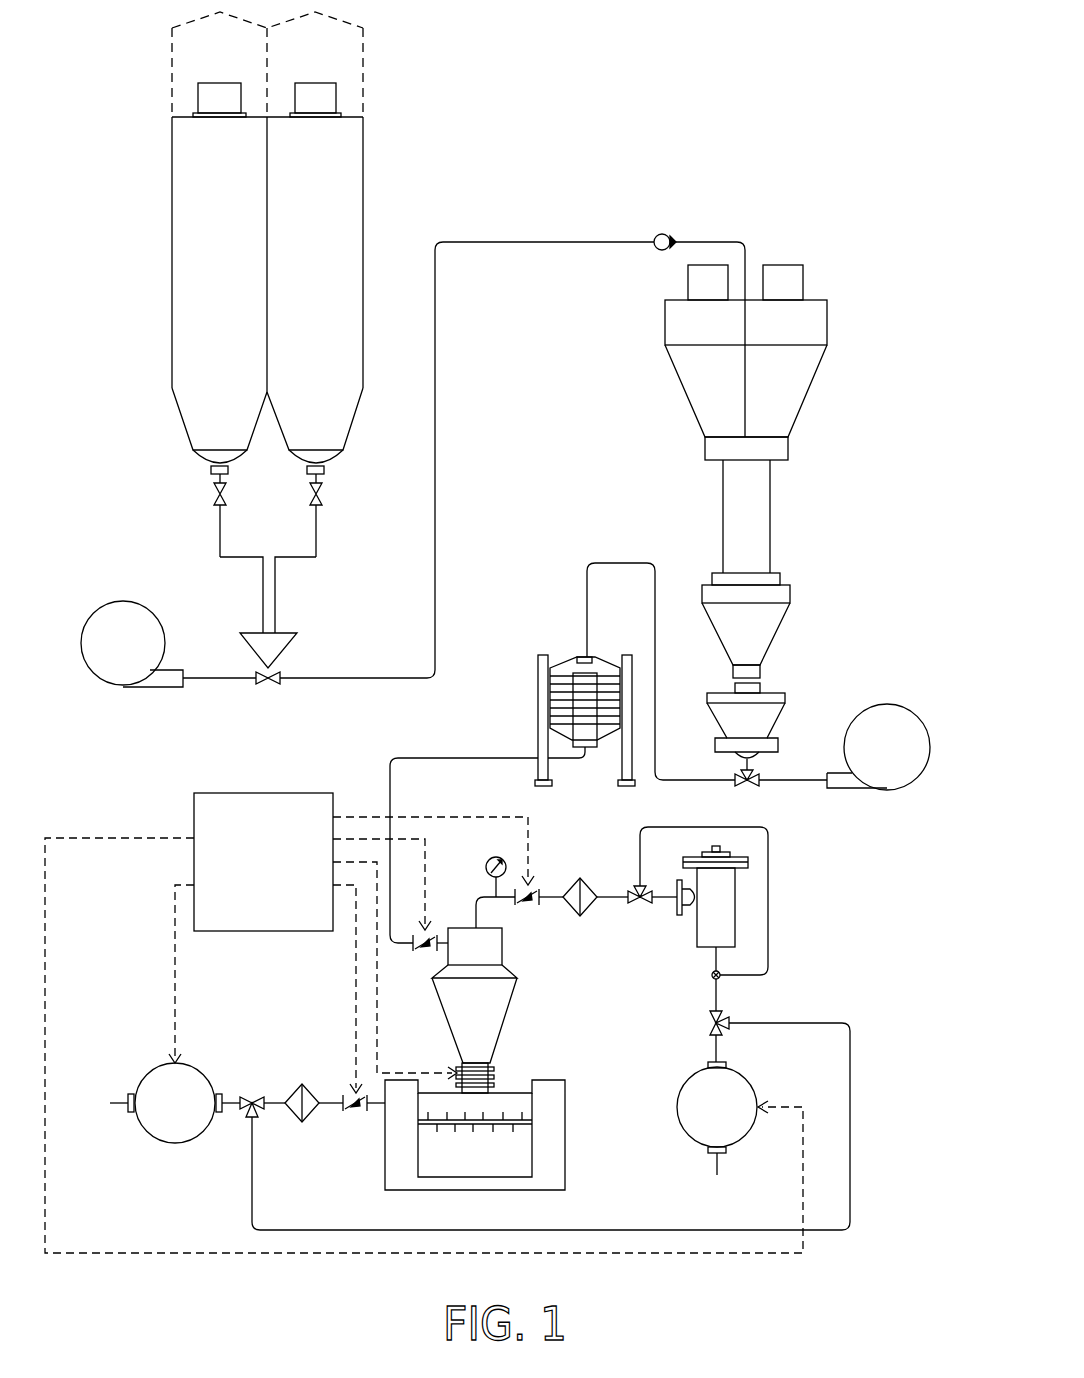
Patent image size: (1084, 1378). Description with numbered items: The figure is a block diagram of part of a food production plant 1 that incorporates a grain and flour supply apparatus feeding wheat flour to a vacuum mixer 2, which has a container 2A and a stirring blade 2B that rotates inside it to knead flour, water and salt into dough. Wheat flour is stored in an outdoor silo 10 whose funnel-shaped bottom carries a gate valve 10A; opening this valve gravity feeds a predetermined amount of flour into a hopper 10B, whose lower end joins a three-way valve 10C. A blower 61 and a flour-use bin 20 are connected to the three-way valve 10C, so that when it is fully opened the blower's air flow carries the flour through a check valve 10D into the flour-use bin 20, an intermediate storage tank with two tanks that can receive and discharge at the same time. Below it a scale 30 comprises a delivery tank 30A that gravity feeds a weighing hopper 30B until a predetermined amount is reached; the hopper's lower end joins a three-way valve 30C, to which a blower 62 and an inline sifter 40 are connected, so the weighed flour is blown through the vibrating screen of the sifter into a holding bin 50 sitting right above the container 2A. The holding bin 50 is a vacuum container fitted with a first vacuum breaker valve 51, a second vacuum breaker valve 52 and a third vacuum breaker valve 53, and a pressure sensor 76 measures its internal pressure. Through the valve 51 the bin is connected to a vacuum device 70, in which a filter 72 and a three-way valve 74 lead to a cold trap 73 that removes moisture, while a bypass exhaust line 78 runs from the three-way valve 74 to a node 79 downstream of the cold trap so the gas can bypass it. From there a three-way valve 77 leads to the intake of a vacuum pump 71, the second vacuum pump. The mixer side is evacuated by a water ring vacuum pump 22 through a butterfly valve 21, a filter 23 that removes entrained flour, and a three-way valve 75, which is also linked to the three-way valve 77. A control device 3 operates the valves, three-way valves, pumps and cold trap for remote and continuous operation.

The food production plant 1 is at (648, 150).
The outdoor silo 10 is at (358, 172).
The valve 10A is at (215, 495).
The hopper 10B is at (285, 632).
The three-way valve 10C is at (278, 682).
The check valve 10D is at (675, 233).
The flour-use bin 20 is at (817, 302).
The scale 30 is at (770, 670).
The delivery tank 30A is at (787, 592).
The weighing hopper 30B is at (783, 700).
The three-way valve 30C is at (757, 784).
The inline sifter 40 is at (542, 710).
The holding bin 50 is at (517, 996).
The valve 51 is at (533, 892).
The valve 52 is at (423, 960).
The valve 53 is at (523, 1086).
The blower 61 is at (108, 612).
The blower 62 is at (900, 713).
The vacuum device 70 is at (797, 995).
The vacuum pump 71 is at (745, 1085).
The filter 72 is at (590, 912).
The cold trap 73 is at (732, 915).
The three-way valve 74 is at (642, 905).
The three-way valve 75 is at (245, 1112).
The pressure sensor 76 is at (487, 862).
The three-way valve 77 is at (752, 1063).
The bypass exhaust line 78 is at (768, 899).
The node 79 is at (722, 979).
The vacuum mixer 2 is at (572, 1142).
The container 2A is at (567, 1112).
The stirring blade 2B is at (428, 1125).
The control device 3 is at (220, 781).
The butterfly valve 21 is at (343, 1098).
The vacuum pump 22 is at (158, 1073).
The filter 23 is at (312, 1114).